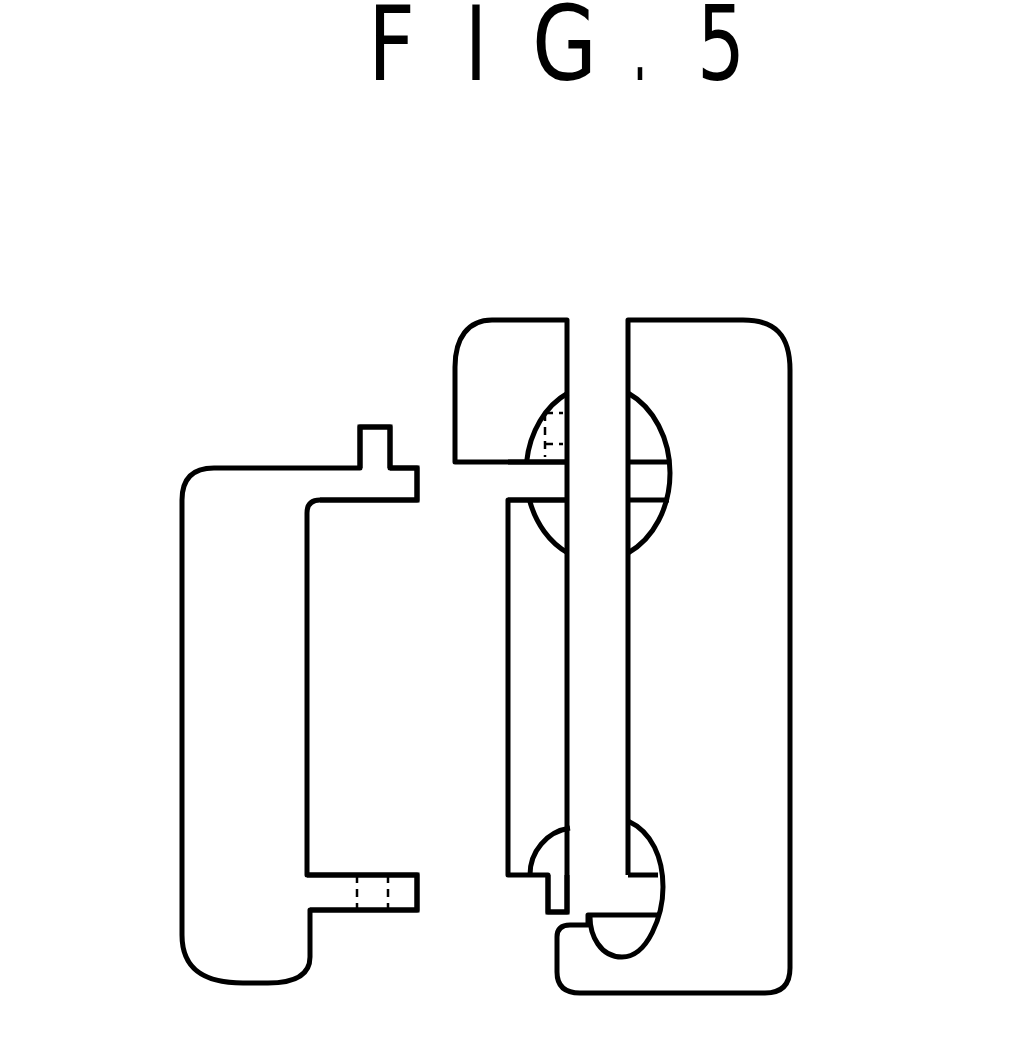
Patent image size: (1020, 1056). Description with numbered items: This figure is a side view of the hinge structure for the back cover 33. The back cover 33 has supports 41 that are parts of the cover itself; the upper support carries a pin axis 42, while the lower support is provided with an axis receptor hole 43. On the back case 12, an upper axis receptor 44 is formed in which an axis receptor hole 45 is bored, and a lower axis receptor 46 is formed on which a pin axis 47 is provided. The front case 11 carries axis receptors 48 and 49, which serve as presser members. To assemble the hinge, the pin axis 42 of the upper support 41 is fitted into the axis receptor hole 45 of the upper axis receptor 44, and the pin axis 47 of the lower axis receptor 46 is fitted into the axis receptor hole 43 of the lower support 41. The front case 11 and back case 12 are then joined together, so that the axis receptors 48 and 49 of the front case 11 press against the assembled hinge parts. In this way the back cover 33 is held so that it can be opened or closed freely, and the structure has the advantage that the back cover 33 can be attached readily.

The front case 11 is at (792, 648).
The back case 12 is at (482, 322).
The back cover 33 is at (183, 767).
The supports 41 is at (352, 503).
The pin axis 42 is at (358, 435).
The axis receptor hole 43 is at (390, 893).
The upper axis receptor 44 is at (533, 433).
The axis receptor hole 45 is at (570, 440).
The lower axis receptor 46 is at (553, 843).
The pin axis 47 is at (545, 890).
The axis receptor 48 is at (665, 522).
The axis receptor 49 is at (657, 940).